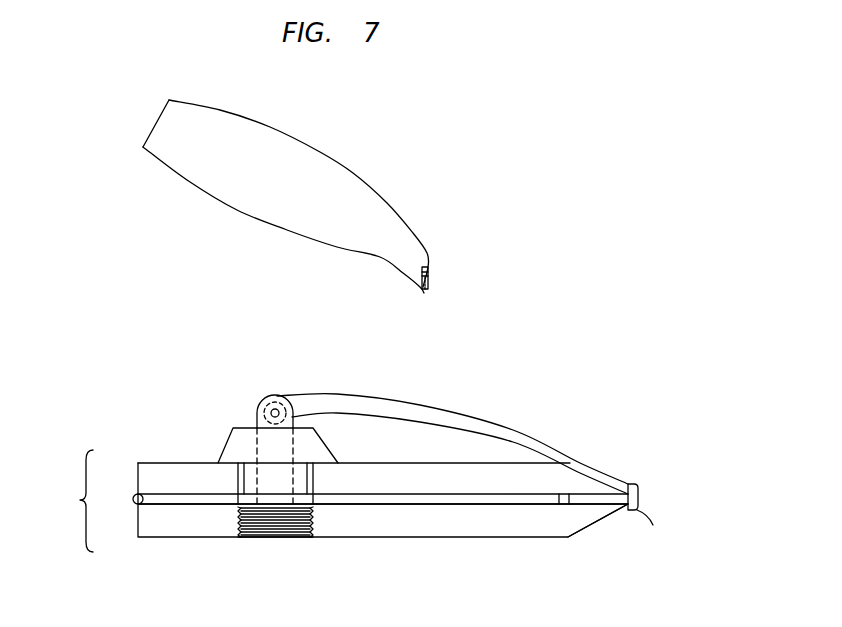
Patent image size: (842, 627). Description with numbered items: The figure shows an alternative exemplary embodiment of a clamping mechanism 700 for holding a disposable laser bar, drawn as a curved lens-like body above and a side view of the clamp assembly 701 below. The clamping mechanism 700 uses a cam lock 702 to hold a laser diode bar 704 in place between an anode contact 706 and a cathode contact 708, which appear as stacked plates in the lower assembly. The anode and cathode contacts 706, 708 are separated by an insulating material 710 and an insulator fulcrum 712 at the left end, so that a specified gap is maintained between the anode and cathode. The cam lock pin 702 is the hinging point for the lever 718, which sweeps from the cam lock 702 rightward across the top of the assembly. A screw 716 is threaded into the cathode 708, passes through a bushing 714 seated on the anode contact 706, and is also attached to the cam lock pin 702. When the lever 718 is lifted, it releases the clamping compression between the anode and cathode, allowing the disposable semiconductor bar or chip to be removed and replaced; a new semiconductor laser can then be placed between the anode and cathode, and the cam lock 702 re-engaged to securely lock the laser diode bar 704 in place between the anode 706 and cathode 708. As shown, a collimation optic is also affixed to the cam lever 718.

The clamping mechanism 700 is at (352, 174).
The collimation optic assembly 701 is at (426, 292).
The cam lock 702 is at (274, 402).
The laser diode bar 704 is at (597, 503).
The anode contact 706 is at (377, 463).
The cathode contact 708 is at (400, 537).
The insulating material 710 is at (487, 503).
The insulator fulcrum 712 is at (144, 507).
The bushing 714 is at (220, 445).
The screw 716 is at (273, 535).
The lever 718 is at (518, 426).